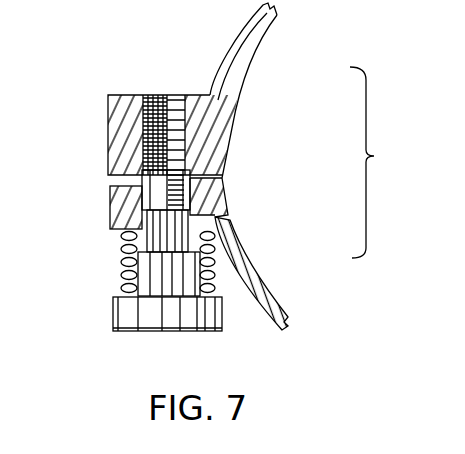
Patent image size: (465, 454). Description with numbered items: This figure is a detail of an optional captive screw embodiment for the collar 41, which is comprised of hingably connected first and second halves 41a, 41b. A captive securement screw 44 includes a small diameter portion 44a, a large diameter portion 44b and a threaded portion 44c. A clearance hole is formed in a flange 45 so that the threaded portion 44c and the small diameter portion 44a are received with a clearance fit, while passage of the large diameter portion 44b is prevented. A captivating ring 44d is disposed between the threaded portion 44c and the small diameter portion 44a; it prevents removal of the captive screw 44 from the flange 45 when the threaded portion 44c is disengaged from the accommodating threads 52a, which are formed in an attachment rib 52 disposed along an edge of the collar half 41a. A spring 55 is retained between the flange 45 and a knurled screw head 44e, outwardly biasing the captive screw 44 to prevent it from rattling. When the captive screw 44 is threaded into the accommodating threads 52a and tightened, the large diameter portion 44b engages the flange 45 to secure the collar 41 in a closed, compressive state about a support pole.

The collar 41 is at (309, 166).
The first collar half 41a is at (232, 127).
The second collar half 41b is at (222, 214).
The captive securement screw 44 is at (148, 288).
The small diameter portion 44a is at (140, 243).
The large diameter portion 44b is at (122, 268).
The threaded portion 44c is at (113, 188).
The captivating ring 44d is at (225, 216).
The knurled screw head 44e is at (152, 318).
The flange 45 is at (116, 207).
The attachment rib 52 is at (108, 117).
The accommodating threads 52a is at (163, 95).
The spring 55 is at (213, 280).